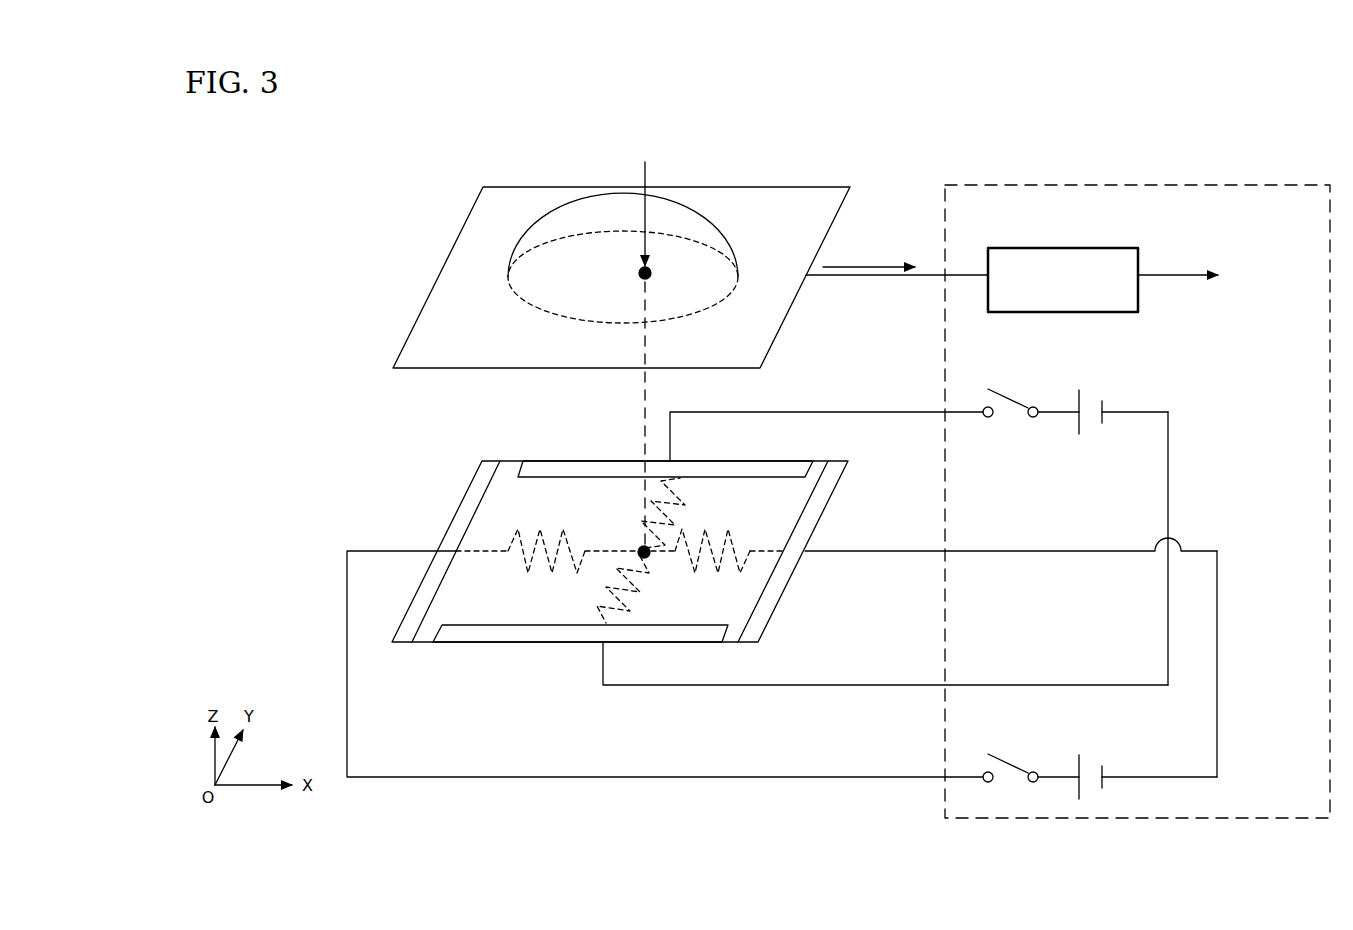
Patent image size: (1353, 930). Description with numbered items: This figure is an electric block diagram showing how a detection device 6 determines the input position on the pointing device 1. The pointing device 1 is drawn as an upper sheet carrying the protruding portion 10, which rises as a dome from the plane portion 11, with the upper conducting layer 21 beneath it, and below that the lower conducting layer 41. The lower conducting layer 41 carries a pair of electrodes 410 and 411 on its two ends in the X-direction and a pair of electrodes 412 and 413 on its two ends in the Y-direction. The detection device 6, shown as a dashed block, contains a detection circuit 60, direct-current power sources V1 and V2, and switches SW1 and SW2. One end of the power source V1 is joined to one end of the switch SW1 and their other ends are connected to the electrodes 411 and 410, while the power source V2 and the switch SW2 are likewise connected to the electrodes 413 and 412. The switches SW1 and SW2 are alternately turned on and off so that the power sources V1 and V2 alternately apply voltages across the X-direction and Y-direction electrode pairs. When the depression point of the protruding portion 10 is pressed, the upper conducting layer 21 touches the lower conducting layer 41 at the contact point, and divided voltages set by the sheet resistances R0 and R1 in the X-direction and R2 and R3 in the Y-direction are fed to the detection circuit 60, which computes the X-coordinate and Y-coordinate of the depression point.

The pointing device 1 is at (850, 168).
The protruding portion 10 is at (680, 210).
The plane portion 11 is at (455, 350).
The upper conducting layer 21 is at (838, 215).
The detection device 6 is at (1283, 185).
The detection circuit 60 is at (1090, 248).
The lower conducting layer 41 is at (829, 461).
The electrode 410 is at (493, 461).
The electrode 411 is at (820, 520).
The electrode 412 is at (573, 461).
The electrode 413 is at (673, 643).
The sheet resistance R0 is at (573, 545).
The sheet resistance R1 is at (738, 545).
The sheet resistance R2 is at (673, 530).
The sheet resistance R3 is at (640, 595).
The switch SW1 is at (1012, 769).
The switch SW2 is at (1012, 404).
The direct-current power source V1 is at (1090, 766).
The direct-current power source V2 is at (1090, 401).